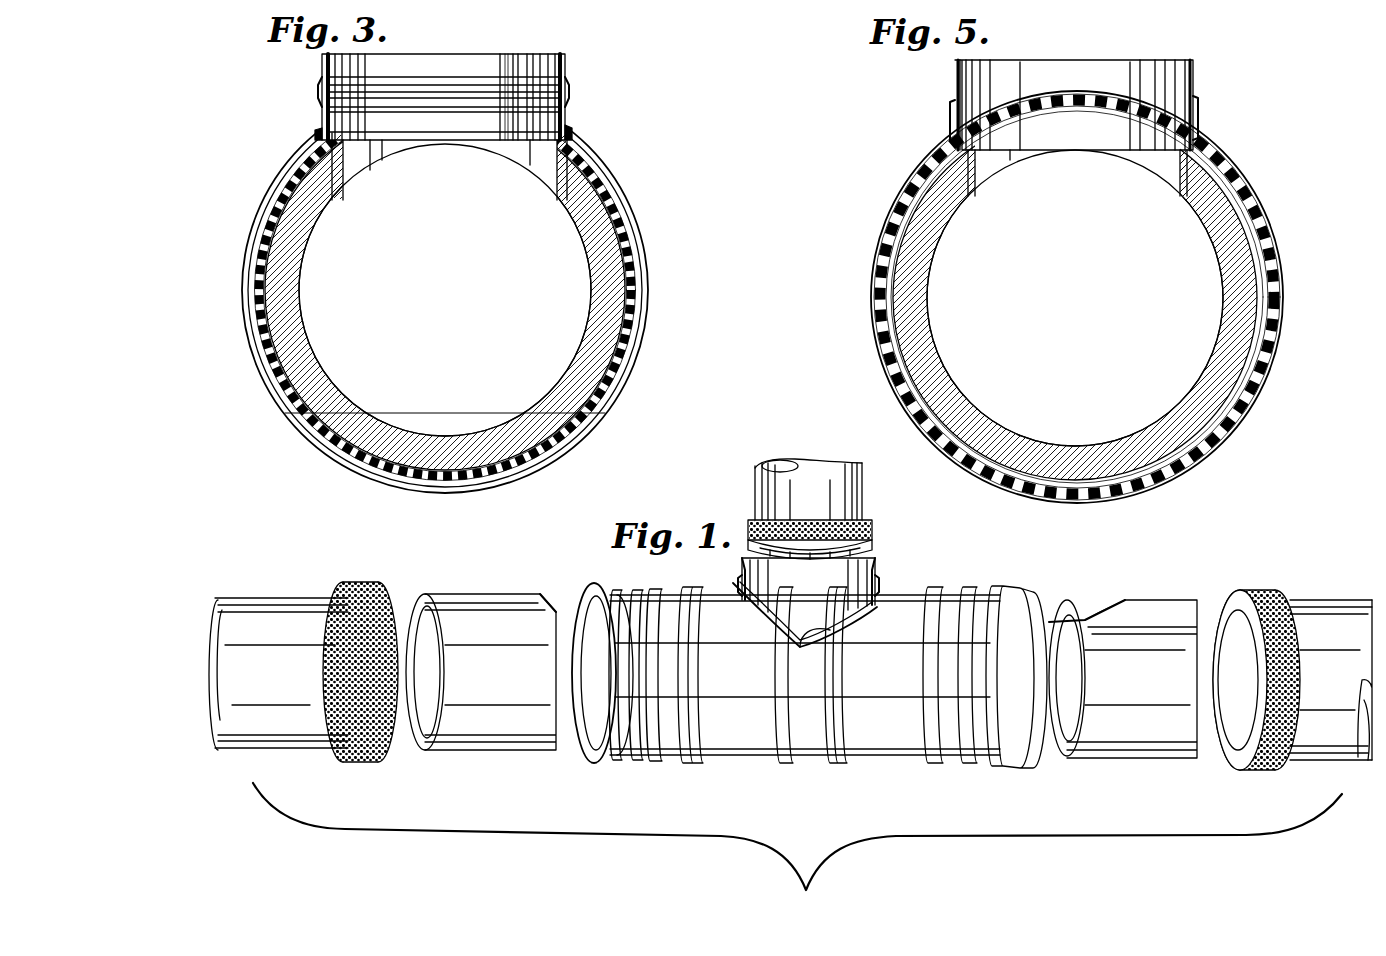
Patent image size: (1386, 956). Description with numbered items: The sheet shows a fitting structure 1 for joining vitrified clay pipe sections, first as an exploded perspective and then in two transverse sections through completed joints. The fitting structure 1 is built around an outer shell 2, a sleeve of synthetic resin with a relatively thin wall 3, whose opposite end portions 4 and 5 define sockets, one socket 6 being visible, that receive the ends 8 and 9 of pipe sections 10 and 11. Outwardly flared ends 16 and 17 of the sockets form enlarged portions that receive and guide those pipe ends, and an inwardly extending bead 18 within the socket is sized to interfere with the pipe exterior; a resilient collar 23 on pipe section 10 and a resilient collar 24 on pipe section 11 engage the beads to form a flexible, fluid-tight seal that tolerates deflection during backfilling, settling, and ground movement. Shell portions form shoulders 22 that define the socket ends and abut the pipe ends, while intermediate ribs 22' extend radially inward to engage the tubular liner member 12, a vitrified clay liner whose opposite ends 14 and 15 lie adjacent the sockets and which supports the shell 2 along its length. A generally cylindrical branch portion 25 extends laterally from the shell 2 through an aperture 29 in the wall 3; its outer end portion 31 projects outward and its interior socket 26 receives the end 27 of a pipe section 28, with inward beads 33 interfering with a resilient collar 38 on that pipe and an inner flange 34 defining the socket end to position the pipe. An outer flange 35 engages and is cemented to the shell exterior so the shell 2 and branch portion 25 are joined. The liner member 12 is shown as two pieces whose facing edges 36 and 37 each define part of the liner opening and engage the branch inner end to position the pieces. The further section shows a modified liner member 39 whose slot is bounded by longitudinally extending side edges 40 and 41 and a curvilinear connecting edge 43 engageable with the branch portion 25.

In FIG. 3, the fitting structure 1 is at (626, 104).
In FIG. 1, the fitting structure 1 is at (900, 540).
In FIG. 3, the outer shell 2 is at (642, 280).
In FIG. 5, the outer shell 2 is at (1272, 246).
In FIG. 1, the outer shell 2 is at (804, 672).
In FIG. 3, the wall 3 is at (636, 318).
In FIG. 5, the wall 3 is at (1256, 386).
In FIG. 1, the end portion 4 is at (624, 588).
In FIG. 1, the end portion 5 is at (996, 596).
In FIG. 1, the socket 6 is at (588, 736).
In FIG. 1, the end of pipe section 8 is at (278, 656).
In FIG. 1, the end of pipe section 9 is at (1335, 665).
In FIG. 1, the pipe section 10 is at (272, 594).
In FIG. 1, the pipe section 11 is at (1342, 600).
In FIG. 3, the liner member 12 is at (296, 326).
In FIG. 1, the liner member 12 is at (799, 666).
In FIG. 1, the end of liner member 14 is at (420, 606).
In FIG. 1, the end of liner member 15 is at (1194, 600).
In FIG. 1, the outwardly flared end 16 is at (586, 594).
In FIG. 1, the outwardly flared end 17 is at (1020, 596).
In FIG. 1, the bead 18 is at (556, 746).
In FIG. 5, the shoulder 22 is at (1296, 296).
In FIG. 3, the rib 22' is at (329, 483).
In FIG. 1, the resilient collar 23 is at (356, 584).
In FIG. 1, the resilient collar 24 is at (1270, 592).
In FIG. 3, the branch portion 25 is at (568, 76).
In FIG. 5, the branch portion 25 is at (1194, 88).
In FIG. 1, the branch portion 25 is at (874, 588).
In FIG. 3, the socket 26 is at (448, 120).
In FIG. 1, the end of pipe section 27 is at (745, 556).
In FIG. 1, the pipe section 28 is at (809, 509).
In FIG. 3, the aperture 29 is at (316, 130).
In FIG. 3, the outer end portion 31 is at (322, 82).
In FIG. 5, the outer end portion 31 is at (955, 102).
In FIG. 1, the outer end portion 31 is at (779, 620).
In FIG. 3, the bead 33 is at (518, 72).
In FIG. 3, the flange 34 is at (374, 162).
In FIG. 3, the outer flange 35 is at (570, 136).
In FIG. 5, the outer flange 35 is at (1198, 138).
In FIG. 1, the outer flange 35 is at (846, 638).
In FIG. 3, the facing edge 36 is at (526, 152).
In FIG. 1, the facing edge 36 is at (540, 596).
In FIG. 1, the facing edge 37 is at (1078, 620).
In FIG. 1, the resilient collar 38 is at (748, 520).
In FIG. 5, the modified liner member 39 is at (932, 334).
In FIG. 3, the side edge 40 is at (343, 182).
In FIG. 5, the side edge 40 is at (975, 190).
In FIG. 3, the side edge 41 is at (556, 190).
In FIG. 5, the side edge 41 is at (1178, 192).
In FIG. 5, the connecting edge 43 is at (1008, 154).